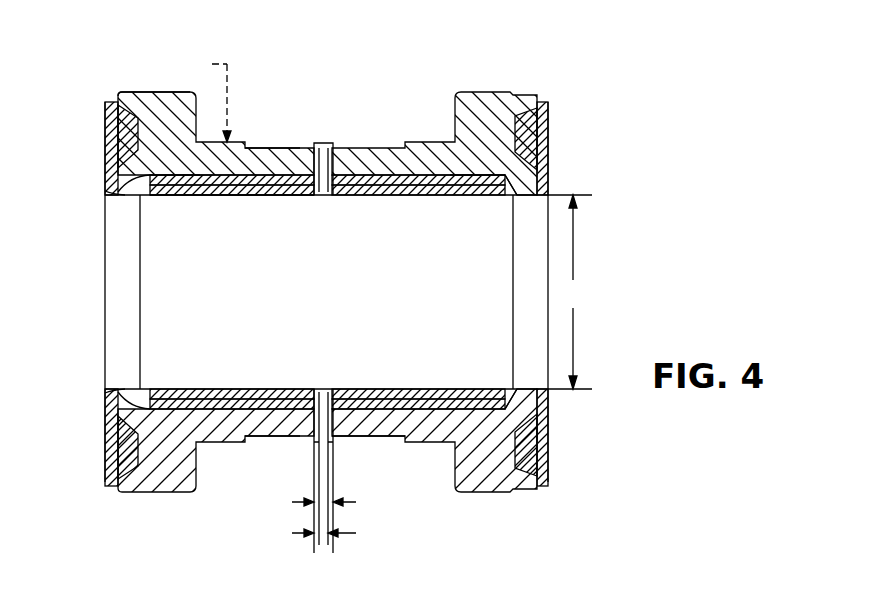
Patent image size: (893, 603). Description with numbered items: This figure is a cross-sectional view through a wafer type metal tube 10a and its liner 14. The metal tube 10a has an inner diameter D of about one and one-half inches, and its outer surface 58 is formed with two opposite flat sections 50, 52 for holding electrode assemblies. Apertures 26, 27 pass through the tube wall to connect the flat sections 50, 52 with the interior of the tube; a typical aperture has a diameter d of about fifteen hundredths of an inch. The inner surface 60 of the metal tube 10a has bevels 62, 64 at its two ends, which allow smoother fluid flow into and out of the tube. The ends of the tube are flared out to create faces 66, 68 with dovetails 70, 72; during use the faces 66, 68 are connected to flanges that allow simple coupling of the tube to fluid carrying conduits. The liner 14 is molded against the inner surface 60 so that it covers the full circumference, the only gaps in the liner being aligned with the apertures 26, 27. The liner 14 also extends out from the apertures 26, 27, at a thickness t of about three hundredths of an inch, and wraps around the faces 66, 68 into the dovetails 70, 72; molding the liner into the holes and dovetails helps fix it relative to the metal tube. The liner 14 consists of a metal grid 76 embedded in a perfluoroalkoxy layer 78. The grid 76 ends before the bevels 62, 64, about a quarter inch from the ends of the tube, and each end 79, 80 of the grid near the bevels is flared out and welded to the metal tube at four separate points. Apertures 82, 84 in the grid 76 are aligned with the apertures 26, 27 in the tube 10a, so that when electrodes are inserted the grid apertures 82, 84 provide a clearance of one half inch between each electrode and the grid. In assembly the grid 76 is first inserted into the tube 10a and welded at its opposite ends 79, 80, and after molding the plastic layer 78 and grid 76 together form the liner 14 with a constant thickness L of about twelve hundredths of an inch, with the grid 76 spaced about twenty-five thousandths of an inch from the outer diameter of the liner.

The wafer type metal tube 10a is at (161, 45).
The liner 14 is at (404, 155).
The aperture 26 is at (324, 136).
The aperture 27 is at (326, 378).
The flat section 50 is at (284, 148).
The flat section 52 is at (273, 429).
The outer surface 58 is at (484, 92).
The inner surface 60 is at (386, 405).
The bevel 62 is at (118, 197).
The bevel 64 is at (520, 197).
The face 66 is at (107, 133).
The face 68 is at (548, 133).
The dovetail 70 is at (113, 102).
The dovetail 72 is at (543, 102).
The metal grid 76 is at (227, 200).
The perfluoroalkoxy (PFA) layer 78 is at (292, 197).
The end of metal grid 79 is at (170, 197).
The end of metal grid 80 is at (495, 191).
The aperture in grid 82 is at (338, 198).
The aperture in grid 84 is at (312, 388).
The liner thickness L is at (212, 99).
The inner diameter D is at (573, 292).
The aperture diameter d is at (351, 518).